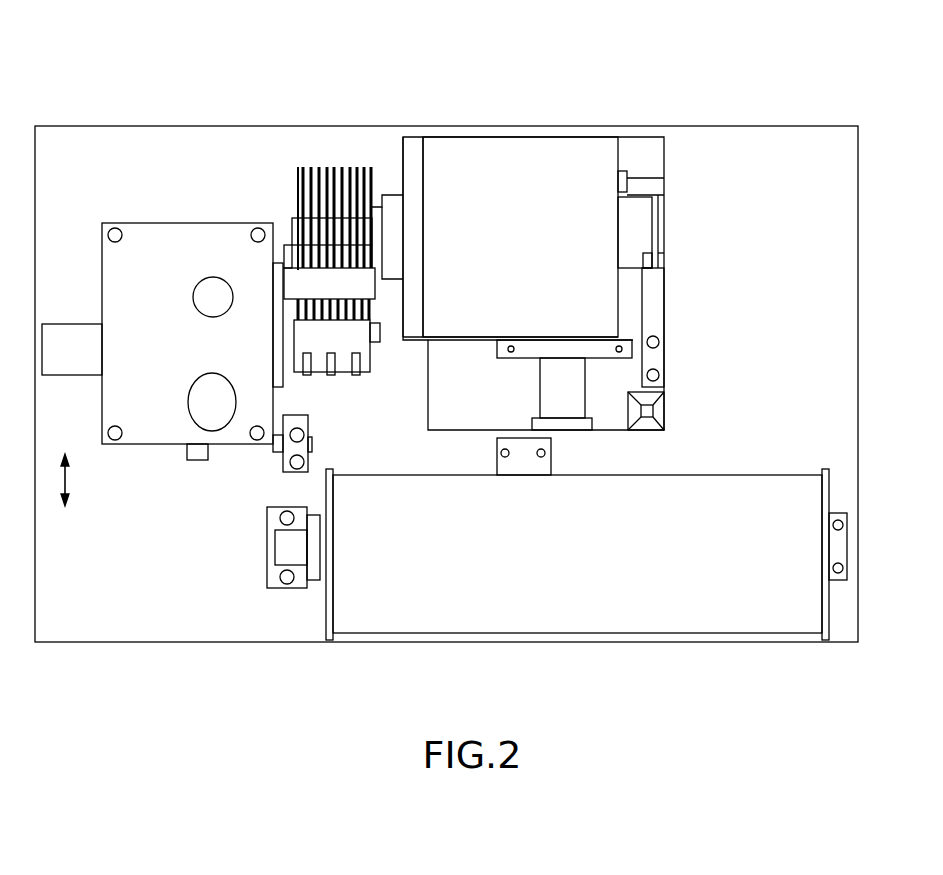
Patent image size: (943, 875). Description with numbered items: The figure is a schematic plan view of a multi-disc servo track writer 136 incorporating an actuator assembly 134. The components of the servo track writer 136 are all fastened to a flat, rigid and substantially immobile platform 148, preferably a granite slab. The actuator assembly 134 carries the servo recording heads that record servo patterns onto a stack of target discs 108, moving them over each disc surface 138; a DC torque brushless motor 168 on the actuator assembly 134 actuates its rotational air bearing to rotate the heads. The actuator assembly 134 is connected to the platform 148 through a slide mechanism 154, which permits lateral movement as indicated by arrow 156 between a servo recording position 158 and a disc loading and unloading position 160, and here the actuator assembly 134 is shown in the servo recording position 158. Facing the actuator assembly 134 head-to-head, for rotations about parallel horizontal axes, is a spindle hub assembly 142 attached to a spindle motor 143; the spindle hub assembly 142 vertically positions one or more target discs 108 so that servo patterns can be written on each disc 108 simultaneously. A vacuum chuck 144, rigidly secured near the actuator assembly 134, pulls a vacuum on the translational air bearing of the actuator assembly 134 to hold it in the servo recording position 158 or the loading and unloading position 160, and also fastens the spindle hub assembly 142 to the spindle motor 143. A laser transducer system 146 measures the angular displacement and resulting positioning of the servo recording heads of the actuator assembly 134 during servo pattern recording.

The multi-disc servo track writer 136 is at (165, 120).
The actuator assembly 134 is at (172, 238).
The DC torque brushless motor 168 is at (71, 331).
The slide mechanism 154 is at (197, 451).
The laser transducer system 146 is at (281, 466).
The servo recording position 158 is at (65, 458).
The arrow 156 is at (66, 482).
The disc loading and unloading position 160 is at (65, 504).
The target discs 108 is at (295, 168).
The disc surface 138 is at (298, 181).
The platform 148 is at (447, 126).
The spindle motor 143 is at (570, 155).
The spindle hub assembly 142 is at (390, 160).
The vacuum chuck 144 is at (453, 620).